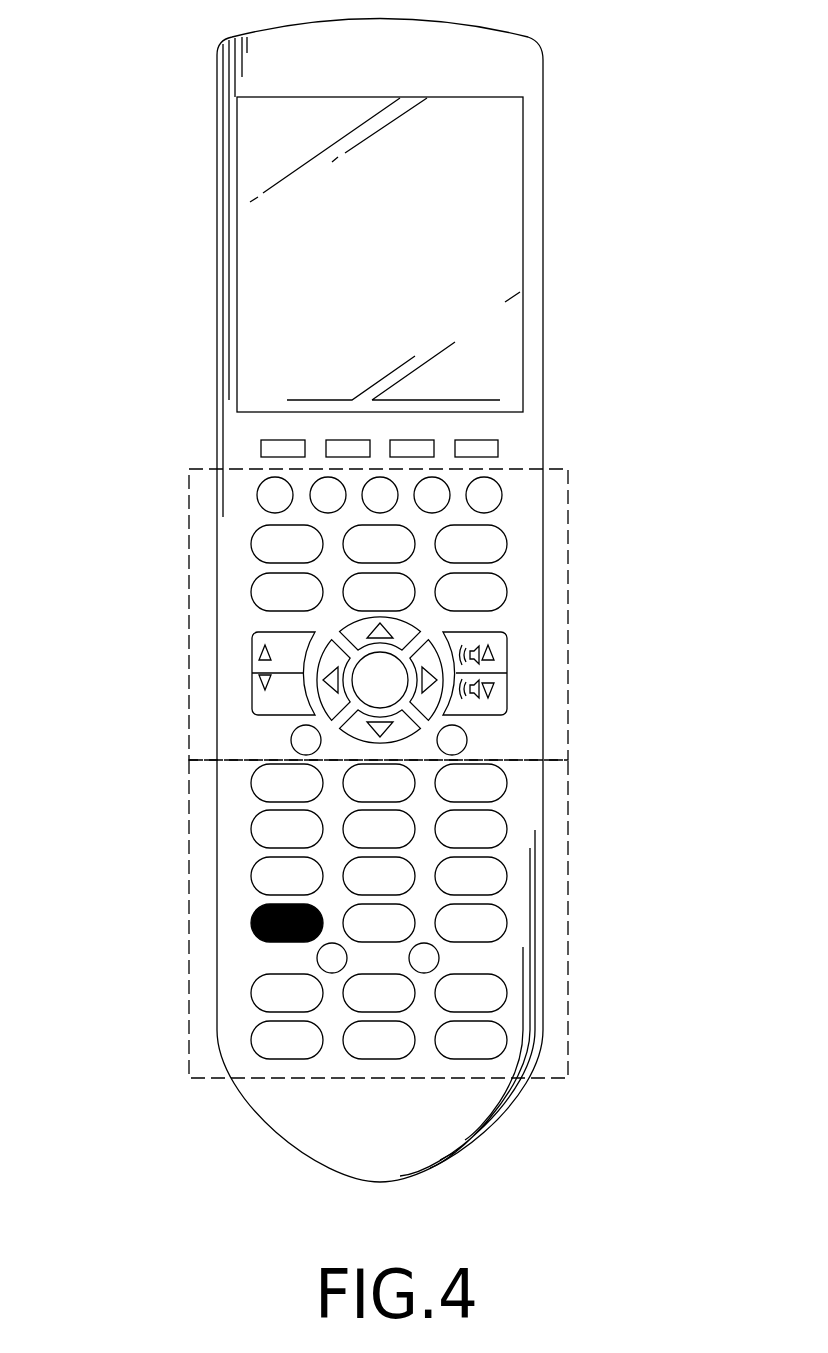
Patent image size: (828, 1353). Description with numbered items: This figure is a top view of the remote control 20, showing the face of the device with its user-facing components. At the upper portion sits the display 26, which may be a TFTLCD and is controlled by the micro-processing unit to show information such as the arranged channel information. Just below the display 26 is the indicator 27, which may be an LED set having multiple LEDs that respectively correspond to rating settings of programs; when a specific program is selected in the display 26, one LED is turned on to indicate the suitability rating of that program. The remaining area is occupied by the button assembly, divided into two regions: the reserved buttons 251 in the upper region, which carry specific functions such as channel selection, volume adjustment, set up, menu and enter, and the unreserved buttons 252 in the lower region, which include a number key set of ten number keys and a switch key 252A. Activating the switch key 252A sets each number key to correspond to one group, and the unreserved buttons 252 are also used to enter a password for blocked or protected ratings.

The remote control 20 is at (482, 47).
The display 26 is at (495, 210).
The indicator 27 is at (499, 447).
The reserved buttons 251 is at (188, 648).
The unreserved buttons 252 is at (388, 919).
The switch key 252A is at (255, 935).